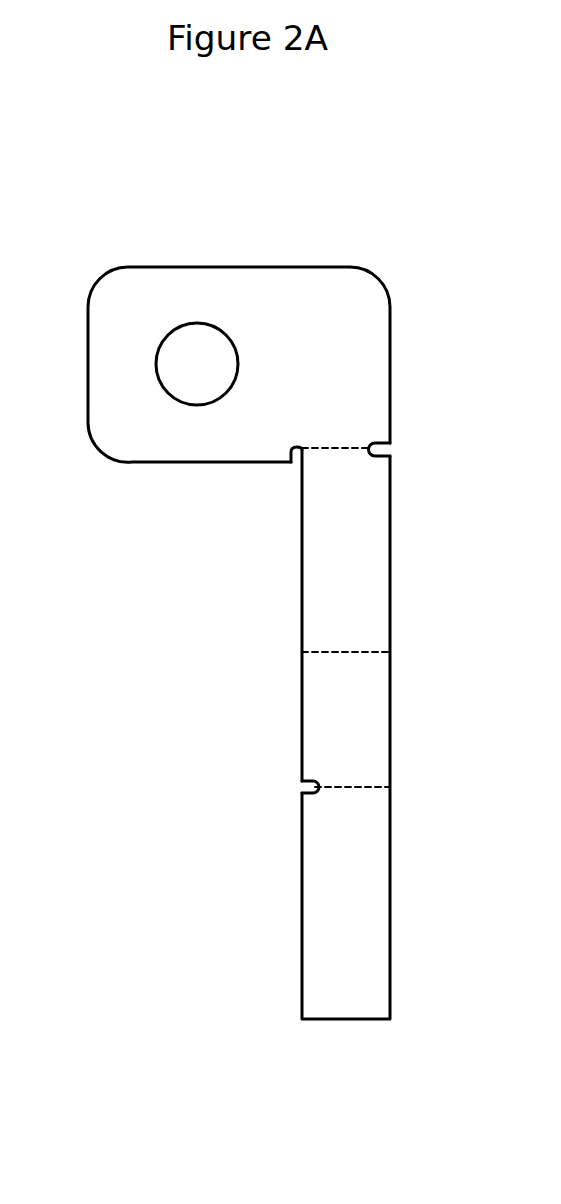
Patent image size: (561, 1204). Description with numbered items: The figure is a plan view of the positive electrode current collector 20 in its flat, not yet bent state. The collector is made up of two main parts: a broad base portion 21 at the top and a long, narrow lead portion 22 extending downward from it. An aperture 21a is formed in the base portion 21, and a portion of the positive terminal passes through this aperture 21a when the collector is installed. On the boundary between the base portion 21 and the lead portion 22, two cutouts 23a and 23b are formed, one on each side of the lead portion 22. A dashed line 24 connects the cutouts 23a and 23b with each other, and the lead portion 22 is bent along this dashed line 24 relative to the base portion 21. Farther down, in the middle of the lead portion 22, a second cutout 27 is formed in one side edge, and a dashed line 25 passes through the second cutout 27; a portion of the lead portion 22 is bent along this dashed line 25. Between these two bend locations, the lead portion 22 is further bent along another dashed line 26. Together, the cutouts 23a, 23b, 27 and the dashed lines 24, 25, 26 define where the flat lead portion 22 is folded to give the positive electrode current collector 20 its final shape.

The positive electrode current collector 20 is at (308, 188).
The base portion 21 is at (110, 322).
The aperture 21a is at (193, 386).
The lead portion 22 is at (372, 590).
The cutout 23a is at (296, 454).
The cutout 23b is at (383, 448).
The dashed line 24 is at (344, 463).
The dashed line 25 is at (345, 802).
The dashed line 26 is at (345, 667).
The second cutout 27 is at (302, 787).